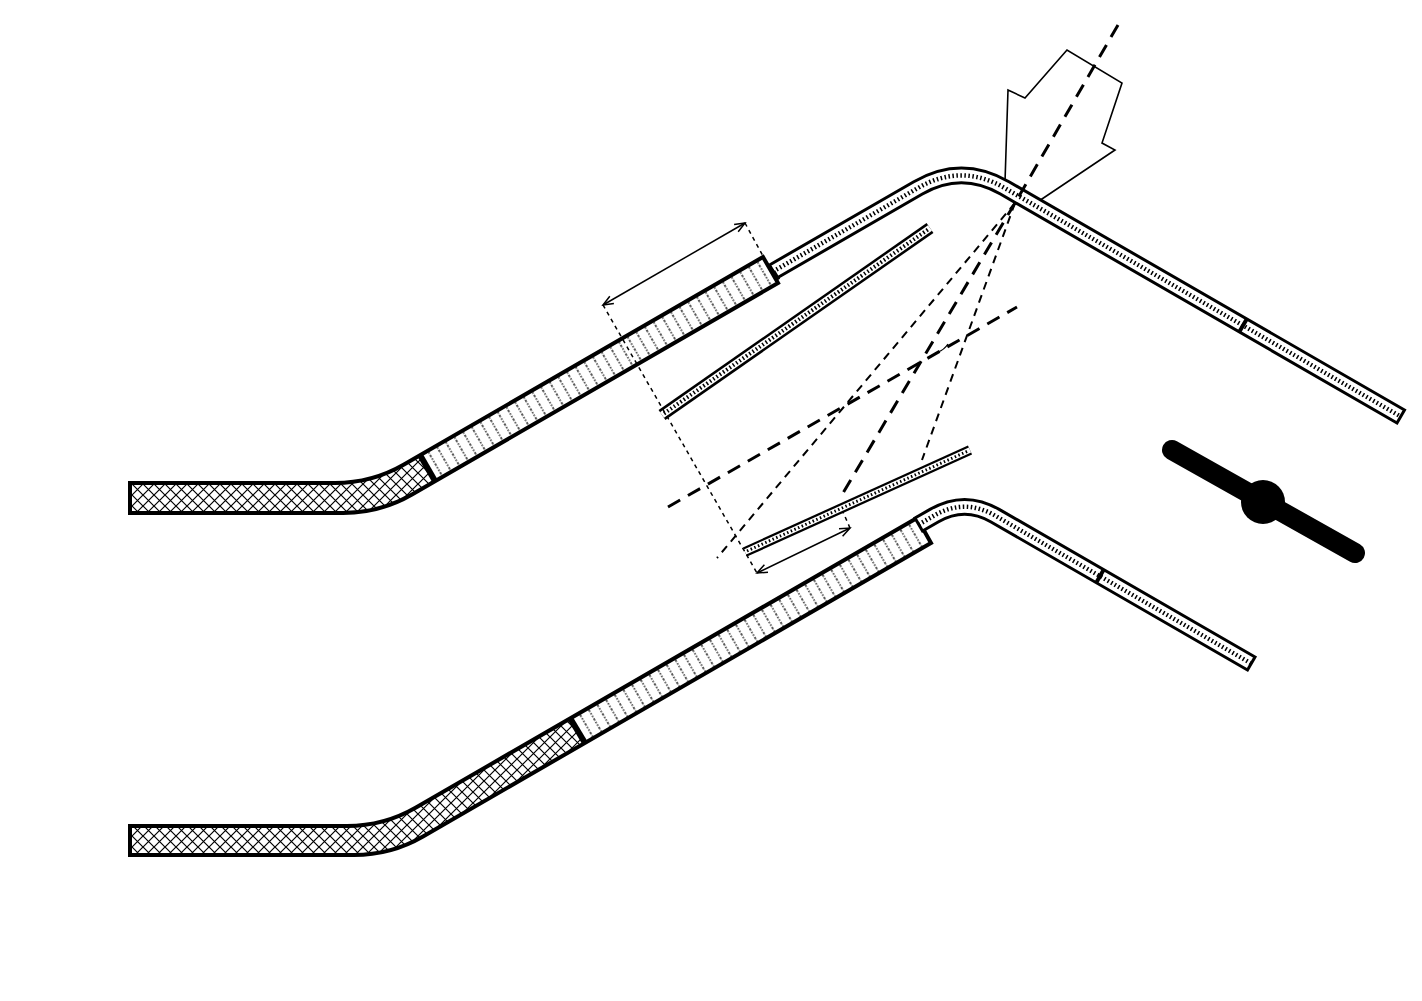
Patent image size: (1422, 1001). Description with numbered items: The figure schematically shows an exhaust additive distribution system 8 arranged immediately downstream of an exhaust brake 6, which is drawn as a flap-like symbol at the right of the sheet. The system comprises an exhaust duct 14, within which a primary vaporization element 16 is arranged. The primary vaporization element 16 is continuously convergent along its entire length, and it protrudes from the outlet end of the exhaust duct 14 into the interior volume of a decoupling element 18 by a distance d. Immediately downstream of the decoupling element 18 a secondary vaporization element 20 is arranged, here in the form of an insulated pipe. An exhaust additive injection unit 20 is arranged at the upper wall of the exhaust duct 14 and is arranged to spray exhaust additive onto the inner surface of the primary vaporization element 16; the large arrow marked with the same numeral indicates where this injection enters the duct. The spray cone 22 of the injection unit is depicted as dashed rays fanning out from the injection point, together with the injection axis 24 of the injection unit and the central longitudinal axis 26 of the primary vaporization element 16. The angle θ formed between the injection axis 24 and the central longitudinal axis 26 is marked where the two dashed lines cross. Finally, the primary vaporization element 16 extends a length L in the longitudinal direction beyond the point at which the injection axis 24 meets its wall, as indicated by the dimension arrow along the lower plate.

The exhaust brake 6 is at (1278, 522).
The exhaust additive distribution system 8 is at (476, 330).
The exhaust duct 14 is at (1033, 543).
The primary vaporization element 16 is at (890, 253).
The decoupling element 18 is at (700, 672).
The exhaust additive injection unit 20 is at (306, 482).
The spray cone 22 is at (928, 441).
The injection axis 24 is at (872, 452).
The central longitudinal axis 26 is at (679, 500).